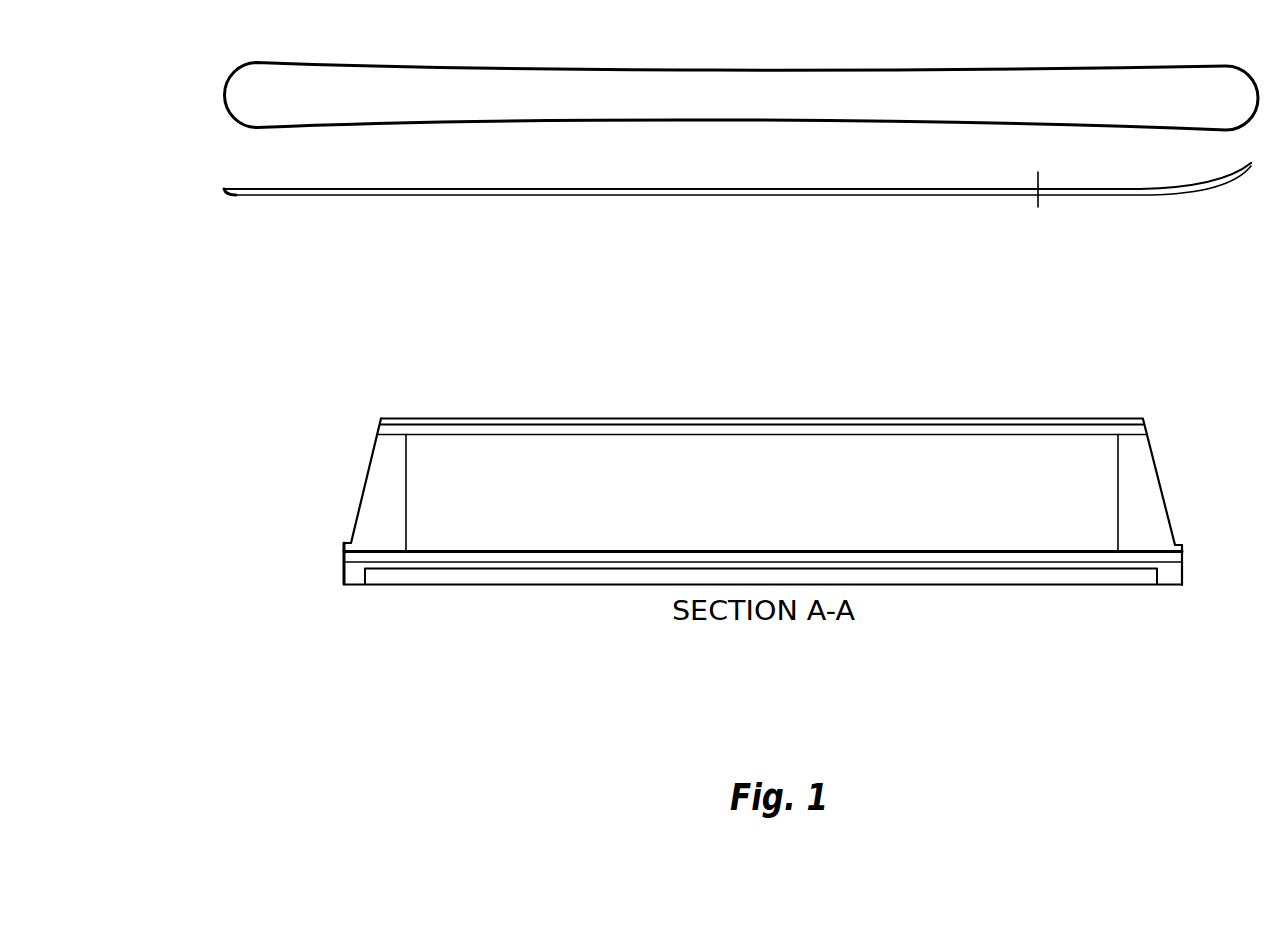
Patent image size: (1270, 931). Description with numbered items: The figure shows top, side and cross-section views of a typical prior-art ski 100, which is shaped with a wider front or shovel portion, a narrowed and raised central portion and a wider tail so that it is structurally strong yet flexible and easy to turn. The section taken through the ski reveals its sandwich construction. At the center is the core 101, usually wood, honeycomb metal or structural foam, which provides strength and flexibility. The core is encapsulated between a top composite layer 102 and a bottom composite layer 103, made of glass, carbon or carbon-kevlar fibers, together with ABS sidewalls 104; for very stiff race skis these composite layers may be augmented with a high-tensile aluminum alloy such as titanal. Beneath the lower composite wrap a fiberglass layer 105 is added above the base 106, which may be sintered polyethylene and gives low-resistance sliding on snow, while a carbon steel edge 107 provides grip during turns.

The ski 100 is at (238, 188).
The core 101 is at (465, 512).
The top composite layer 102 is at (397, 428).
The bottom composite layer 103 is at (378, 559).
The ABS sidewall 104 is at (378, 475).
The fiberglass layer 105 is at (437, 569).
The base 106 is at (467, 587).
The carbon steel edge 107 is at (348, 573).